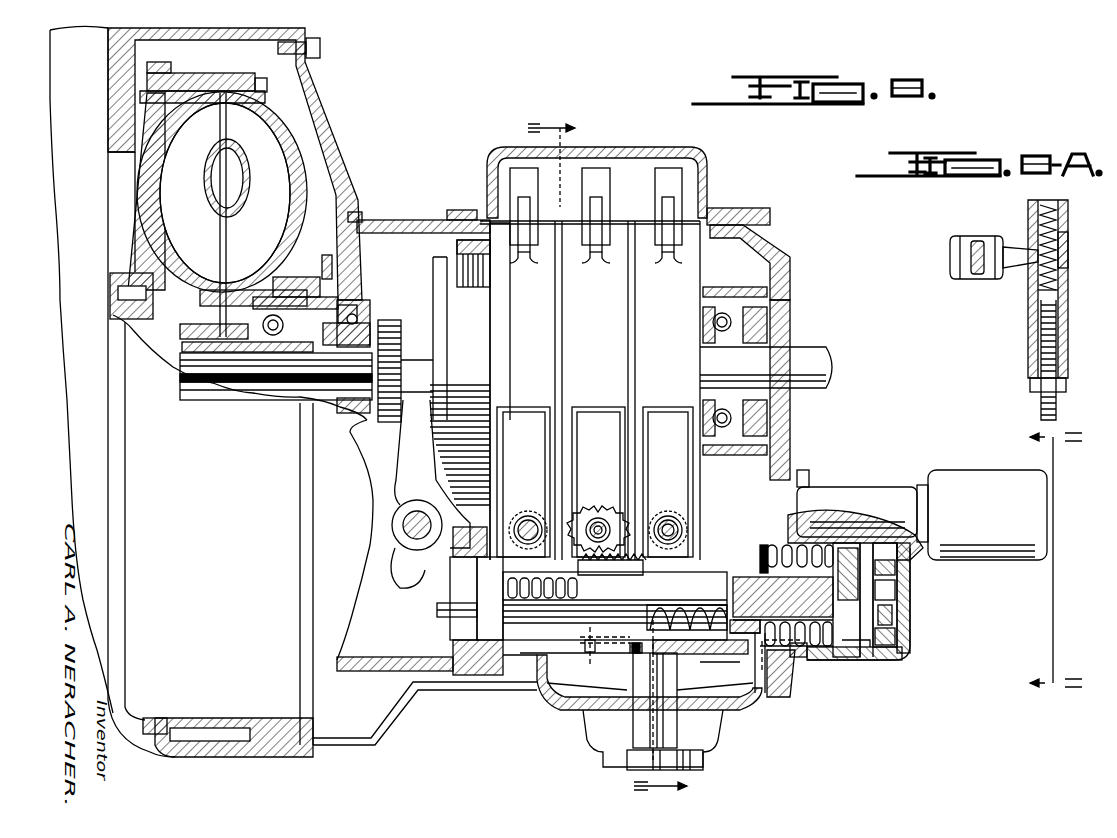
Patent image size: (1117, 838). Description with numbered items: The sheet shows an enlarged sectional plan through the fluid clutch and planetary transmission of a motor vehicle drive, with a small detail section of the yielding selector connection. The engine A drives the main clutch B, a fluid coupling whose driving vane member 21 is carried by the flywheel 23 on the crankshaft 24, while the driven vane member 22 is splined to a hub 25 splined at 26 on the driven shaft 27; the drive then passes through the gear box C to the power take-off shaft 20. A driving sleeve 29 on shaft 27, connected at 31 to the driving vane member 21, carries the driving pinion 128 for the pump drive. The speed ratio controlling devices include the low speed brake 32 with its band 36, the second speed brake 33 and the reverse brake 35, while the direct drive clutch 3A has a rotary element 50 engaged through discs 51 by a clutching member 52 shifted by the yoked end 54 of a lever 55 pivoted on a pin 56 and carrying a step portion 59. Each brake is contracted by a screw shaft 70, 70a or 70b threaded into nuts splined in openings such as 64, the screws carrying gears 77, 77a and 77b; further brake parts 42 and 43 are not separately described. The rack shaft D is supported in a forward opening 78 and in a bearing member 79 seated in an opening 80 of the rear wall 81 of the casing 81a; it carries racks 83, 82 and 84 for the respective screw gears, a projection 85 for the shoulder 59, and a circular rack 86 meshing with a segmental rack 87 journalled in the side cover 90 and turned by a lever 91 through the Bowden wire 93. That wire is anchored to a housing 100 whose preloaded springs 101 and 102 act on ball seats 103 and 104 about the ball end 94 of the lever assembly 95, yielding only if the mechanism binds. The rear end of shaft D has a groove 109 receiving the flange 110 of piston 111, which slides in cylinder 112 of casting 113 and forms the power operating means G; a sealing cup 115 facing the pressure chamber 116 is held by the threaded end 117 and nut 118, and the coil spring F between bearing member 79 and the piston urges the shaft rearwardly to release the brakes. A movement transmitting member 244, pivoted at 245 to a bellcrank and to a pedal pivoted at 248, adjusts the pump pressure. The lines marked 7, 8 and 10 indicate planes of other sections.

In FIG. 6, the engine A is at (66, 142).
In FIG. 6, the main clutch B is at (268, 113).
In FIG. 6, the change speed transmission C is at (700, 156).
In FIG. 6, the actuating shaft D is at (832, 648).
In FIG. 6, the prime mover means F is at (812, 528).
In FIG. 6, the power operating means G is at (905, 580).
In FIG. 6, the section line 7 is at (618, 458).
In FIG. 6, the section line 8 is at (1042, 561).
In FIG. 6, the housing 10 is at (676, 660).
In FIG. 6, the power take-off shaft 20 is at (818, 362).
In FIG. 6, the driving vane member 21 is at (300, 172).
In FIG. 6, the driven vane member 22 is at (198, 295).
In FIG. 6, the engine flywheel 23 is at (165, 72).
In FIG. 6, the engine crankshaft 24 is at (118, 322).
In FIG. 6, the hub 25 is at (182, 352).
In FIG. 6, the spline 26 is at (212, 380).
In FIG. 6, the driven shaft 27 is at (262, 392).
In FIG. 6, the driving sleeve 29 is at (352, 432).
In FIG. 6, the connection 31 is at (312, 290).
In FIG. 6, the low speed controlling device 32 is at (617, 240).
In FIG. 6, the second speed braking device 33 is at (540, 248).
In FIG. 6, the reverse speed braking device 35 is at (716, 210).
In FIG. 6, the band 36 is at (600, 330).
In FIG. 6, the third speed clutching controlling device 3A is at (430, 272).
In FIG. 6, the piston 42 is at (605, 147).
In FIG. 6, the piston rod 43 is at (583, 185).
In FIG. 6, the rotary controlling element 50 is at (316, 262).
In FIG. 6, the discs 51 is at (447, 232).
In FIG. 6, the clutching member 52 is at (430, 290).
In FIG. 6, the yoked end 54 is at (420, 410).
In FIG. 6, the actuating lever 55 is at (410, 485).
In FIG. 6, the pin 56 is at (403, 525).
In FIG. 6, the step actuating portion 59 is at (398, 586).
In FIG. 6, the splined opening 64 is at (600, 526).
In FIG. 6, the operating shaft 70 is at (595, 528).
In FIG. 6, the operating shaft 70a is at (680, 520).
In FIG. 6, the operating shaft 70b is at (528, 516).
In FIG. 6, the gear 77 is at (594, 518).
In FIG. 6, the gear 77a is at (760, 548).
In FIG. 6, the gear 77b is at (530, 574).
In FIG. 6, the forward opening 78 is at (447, 630).
In FIG. 6, the bearing member 79 is at (766, 545).
In FIG. 6, the opening 80 is at (778, 690).
In FIG. 6, the rear end wall 81 is at (809, 477).
In FIG. 6, the transmission casing 81a is at (778, 250).
In FIG. 6, the rack 82 is at (620, 575).
In FIG. 6, the rack 83 is at (670, 600).
In FIG. 6, the rack 84 is at (575, 600).
In FIG. 6, the third speed actuating projection 85 is at (437, 607).
In FIG. 6, the circular rack 86 is at (750, 582).
In FIG. 6, the segmental rack 87 is at (678, 675).
In FIG. 6, the transmission side cover 90 is at (738, 707).
In FIG. 6, the lever 91 is at (630, 768).
In FIG. 5-A, the Bowden wire operating mechanism 93 is at (1041, 400).
In FIG. 5-A, the ball end 94 is at (1062, 245).
In FIG. 5-A, the lever assembly 95 is at (975, 279).
In FIG. 5-A, the housing 100 is at (1028, 344).
In FIG. 5-A, the spring 101 is at (1030, 225).
In FIG. 5-A, the spring 102 is at (1034, 290).
In FIG. 5-A, the ball seat 103 is at (1005, 231).
In FIG. 5-A, the ball seat 104 is at (1060, 262).
In FIG. 6, the groove 109 is at (848, 543).
In FIG. 6, the flange 110 is at (846, 660).
In FIG. 6, the piston assembly 111 is at (886, 612).
In FIG. 6, the cylinder 112 is at (892, 645).
In FIG. 6, the casting 113 is at (842, 495).
In FIG. 6, the sealing cup 115 is at (868, 660).
In FIG. 6, the pressure chamber 116 is at (890, 628).
In FIG. 6, the threaded reduced end 117 is at (888, 600).
In FIG. 6, the nut 118 is at (890, 588).
In FIG. 6, the driving pinion 128 is at (372, 378).
In FIG. 6, the movement transmitting member 244 is at (395, 720).
In FIG. 6, the pivotal connection 245 is at (575, 714).
In FIG. 6, the pivot 248 is at (158, 718).